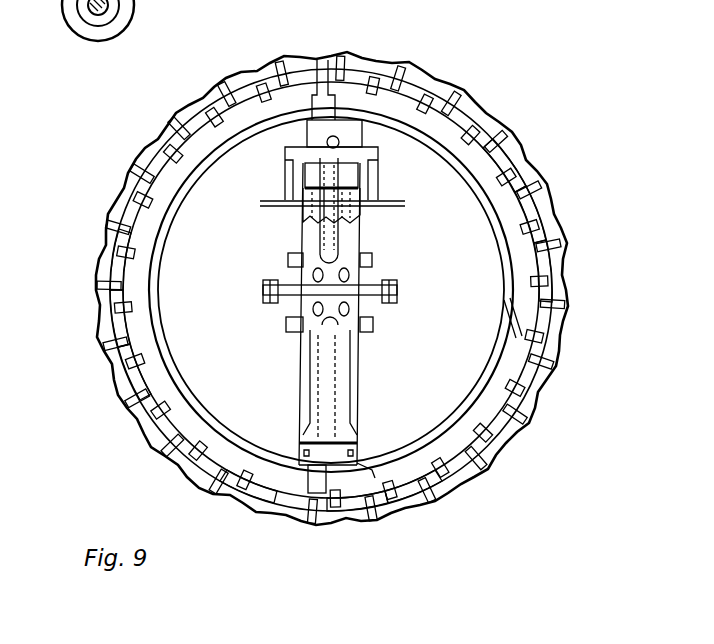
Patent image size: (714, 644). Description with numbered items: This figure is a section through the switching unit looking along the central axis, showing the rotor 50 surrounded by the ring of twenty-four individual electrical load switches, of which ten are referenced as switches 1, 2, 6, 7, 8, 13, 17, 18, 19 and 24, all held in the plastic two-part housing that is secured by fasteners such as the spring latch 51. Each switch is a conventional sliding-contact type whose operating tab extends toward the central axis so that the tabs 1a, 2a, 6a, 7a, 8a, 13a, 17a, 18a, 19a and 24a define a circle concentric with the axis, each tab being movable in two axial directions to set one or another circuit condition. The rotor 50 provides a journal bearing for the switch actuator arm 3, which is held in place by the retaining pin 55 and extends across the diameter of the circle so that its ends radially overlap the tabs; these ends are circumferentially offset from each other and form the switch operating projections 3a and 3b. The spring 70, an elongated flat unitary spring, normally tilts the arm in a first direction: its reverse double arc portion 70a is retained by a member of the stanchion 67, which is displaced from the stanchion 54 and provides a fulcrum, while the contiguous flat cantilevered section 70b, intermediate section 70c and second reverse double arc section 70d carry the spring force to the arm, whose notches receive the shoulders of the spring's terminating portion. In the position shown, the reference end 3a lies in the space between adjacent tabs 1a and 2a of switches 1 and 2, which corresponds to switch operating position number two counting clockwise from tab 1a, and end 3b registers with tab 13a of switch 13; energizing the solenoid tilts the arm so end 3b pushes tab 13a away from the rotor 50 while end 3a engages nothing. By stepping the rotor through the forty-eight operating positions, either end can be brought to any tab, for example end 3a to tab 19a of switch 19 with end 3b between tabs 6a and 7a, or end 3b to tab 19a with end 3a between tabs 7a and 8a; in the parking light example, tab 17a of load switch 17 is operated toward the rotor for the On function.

The spring latch 51 is at (93, 9).
The individual electrical load switch 13 is at (311, 60).
The operating tab 13a is at (298, 62).
The load switch 17 is at (520, 162).
The individual electrical load switch 18 is at (542, 206).
The individual electrical load switch 19 is at (560, 256).
The operating tab 19a is at (552, 292).
The rotor 50 is at (495, 320).
The switch operating projection 3b is at (297, 123).
The stanchion 67 is at (292, 172).
The reverse double arc portion 70a is at (356, 178).
The flat cantilevered section 70b is at (361, 212).
The operating tab 17a is at (518, 190).
The tread block 18a is at (528, 230).
The switch actuator arm 3 is at (304, 252).
The retaining pin 55 is at (382, 288).
The operating tab 8a is at (122, 243).
The individual electrical load switch 8 is at (104, 258).
The operating tab 7a is at (126, 299).
The individual electrical load switch 7 is at (104, 323).
The operating tab 6a is at (134, 354).
The individual electrical load switch 6 is at (120, 377).
The stanchion 54 is at (294, 334).
The spring 70 is at (340, 351).
The intermediate section 70c is at (340, 370).
The switch operating projection 3a is at (282, 470).
The operating tab 1a is at (373, 470).
The operating tab 2a is at (212, 490).
The individual electrical load switch 2 is at (286, 518).
The second reverse double arc section 70d is at (324, 494).
The individual electrical load switch 1 is at (358, 510).
The tread block 24a is at (410, 498).
The individual electrical load switch 24 is at (408, 504).